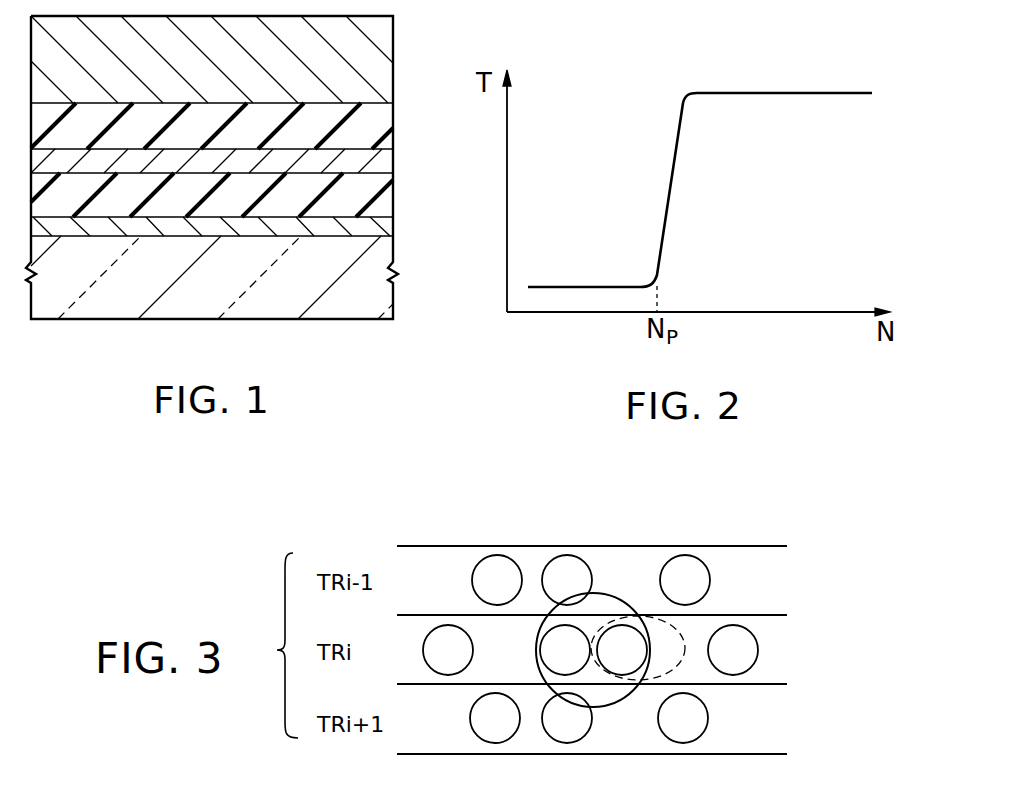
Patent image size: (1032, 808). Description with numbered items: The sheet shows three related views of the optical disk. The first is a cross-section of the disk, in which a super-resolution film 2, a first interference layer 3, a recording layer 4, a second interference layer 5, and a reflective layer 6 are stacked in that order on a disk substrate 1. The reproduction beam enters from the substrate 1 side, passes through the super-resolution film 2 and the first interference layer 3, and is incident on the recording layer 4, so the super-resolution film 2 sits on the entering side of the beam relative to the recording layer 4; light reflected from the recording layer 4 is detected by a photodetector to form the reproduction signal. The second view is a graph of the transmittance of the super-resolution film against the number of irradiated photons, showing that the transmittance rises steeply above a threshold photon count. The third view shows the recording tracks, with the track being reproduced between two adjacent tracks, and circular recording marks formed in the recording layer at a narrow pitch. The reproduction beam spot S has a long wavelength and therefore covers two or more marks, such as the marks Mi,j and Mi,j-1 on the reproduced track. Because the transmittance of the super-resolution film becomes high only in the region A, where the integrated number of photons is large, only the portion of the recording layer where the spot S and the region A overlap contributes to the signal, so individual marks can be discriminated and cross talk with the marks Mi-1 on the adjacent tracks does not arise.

In FIG. 1, the disk substrate 1 is at (386, 292).
In FIG. 1, the super-resolution film 2 is at (386, 229).
In FIG. 1, the first interference layer 3 is at (386, 198).
In FIG. 1, the recording layer 4 is at (386, 161).
In FIG. 1, the second interference layer 5 is at (386, 119).
In FIG. 1, the reflective layer 6 is at (386, 44).
In FIG. 3, the reproduction beam spot S is at (628, 600).
In FIG. 3, the region of high transmittance A is at (698, 615).
In FIG. 3, the recording mark on adjacent track Mi-1 is at (578, 556).
In FIG. 3, the recording mark Mi,j is at (632, 676).
In FIG. 3, the recording mark Mi,j-1 is at (548, 672).